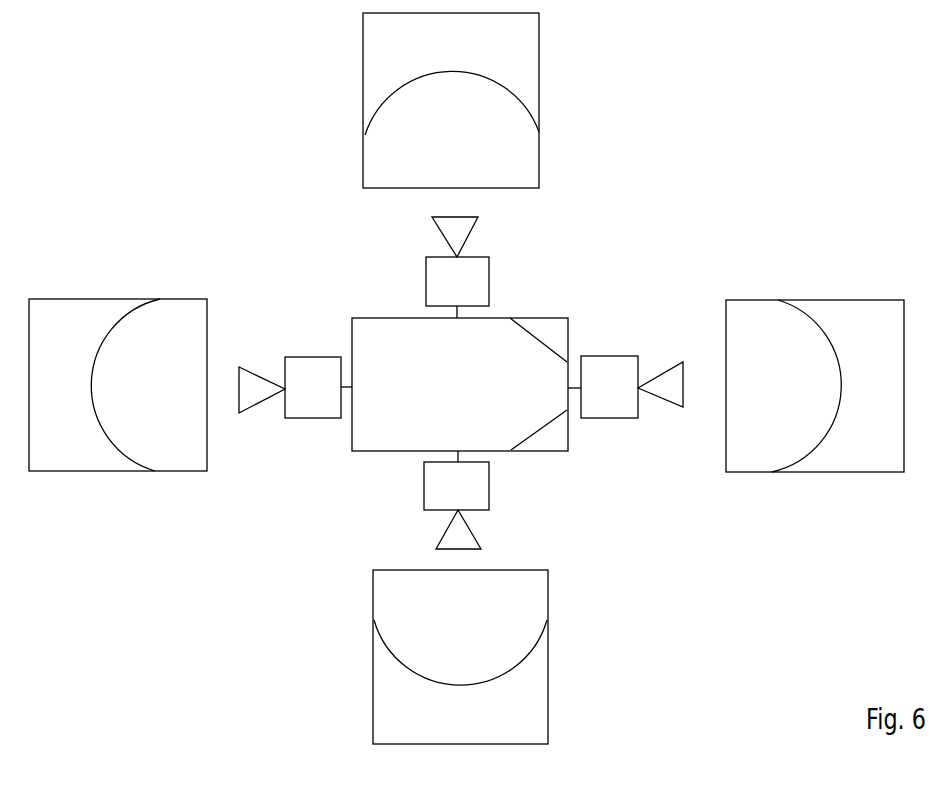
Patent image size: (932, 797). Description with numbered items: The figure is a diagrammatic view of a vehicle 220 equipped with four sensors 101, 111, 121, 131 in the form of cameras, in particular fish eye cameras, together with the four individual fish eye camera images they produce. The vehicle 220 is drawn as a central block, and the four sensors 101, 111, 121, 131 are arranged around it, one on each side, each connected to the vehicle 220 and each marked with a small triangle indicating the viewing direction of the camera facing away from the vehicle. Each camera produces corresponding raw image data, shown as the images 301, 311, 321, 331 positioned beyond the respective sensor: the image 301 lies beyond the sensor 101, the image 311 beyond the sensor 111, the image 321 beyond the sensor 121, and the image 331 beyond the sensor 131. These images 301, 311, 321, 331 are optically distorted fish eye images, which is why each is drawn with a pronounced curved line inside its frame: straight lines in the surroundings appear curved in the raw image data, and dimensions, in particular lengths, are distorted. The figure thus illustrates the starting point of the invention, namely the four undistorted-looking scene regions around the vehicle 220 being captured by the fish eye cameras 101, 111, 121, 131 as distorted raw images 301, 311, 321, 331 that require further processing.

The sensor 101 is at (457, 267).
The sensor 111 is at (456, 500).
The sensor 121 is at (295, 387).
The sensor 131 is at (625, 387).
The vehicle 220 is at (397, 430).
The image 301 is at (527, 73).
The image 311 is at (541, 683).
The image 321 is at (81, 451).
The image 331 is at (860, 460).